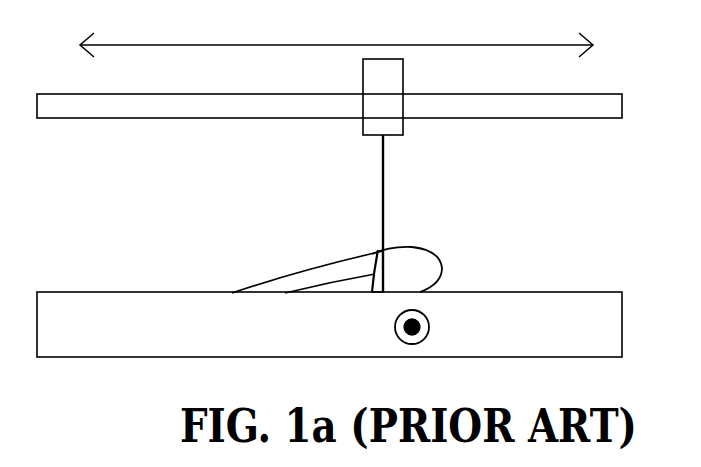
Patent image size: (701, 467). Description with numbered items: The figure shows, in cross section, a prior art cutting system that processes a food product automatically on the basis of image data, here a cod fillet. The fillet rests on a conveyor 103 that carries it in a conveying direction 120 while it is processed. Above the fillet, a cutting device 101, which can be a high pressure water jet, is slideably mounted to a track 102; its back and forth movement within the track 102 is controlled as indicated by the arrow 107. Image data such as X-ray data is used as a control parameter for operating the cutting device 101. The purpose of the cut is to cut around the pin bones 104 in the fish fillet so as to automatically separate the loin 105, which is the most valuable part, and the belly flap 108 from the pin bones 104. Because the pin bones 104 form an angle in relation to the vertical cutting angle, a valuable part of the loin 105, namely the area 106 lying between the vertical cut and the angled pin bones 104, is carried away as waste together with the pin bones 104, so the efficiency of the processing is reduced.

The cutting device 101 is at (380, 70).
The track 102 is at (602, 113).
The conveyor 103 is at (572, 307).
The pin bones 104 is at (373, 268).
The loin 105 is at (423, 260).
The area 106 is at (377, 295).
The arrow 107 is at (314, 47).
The belly flap 108 is at (295, 280).
The conveying direction 120 is at (430, 335).